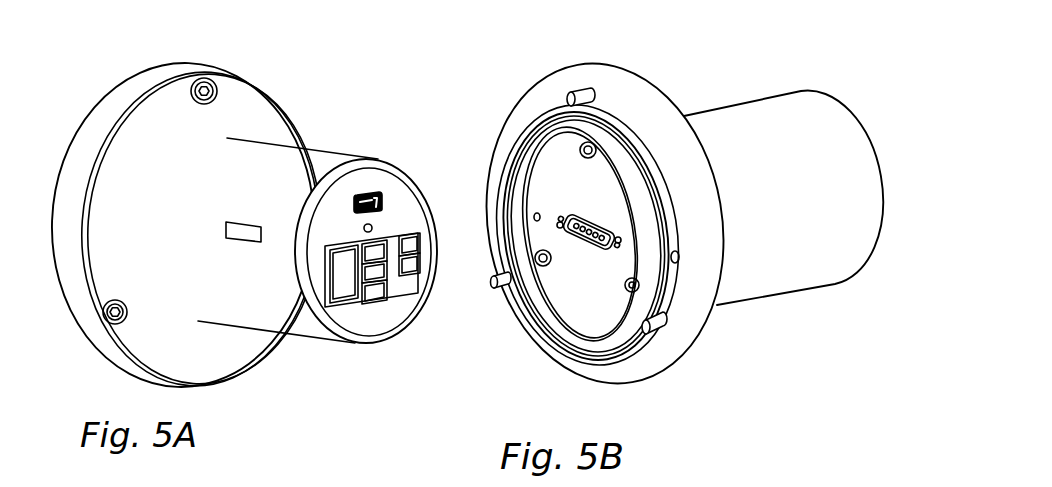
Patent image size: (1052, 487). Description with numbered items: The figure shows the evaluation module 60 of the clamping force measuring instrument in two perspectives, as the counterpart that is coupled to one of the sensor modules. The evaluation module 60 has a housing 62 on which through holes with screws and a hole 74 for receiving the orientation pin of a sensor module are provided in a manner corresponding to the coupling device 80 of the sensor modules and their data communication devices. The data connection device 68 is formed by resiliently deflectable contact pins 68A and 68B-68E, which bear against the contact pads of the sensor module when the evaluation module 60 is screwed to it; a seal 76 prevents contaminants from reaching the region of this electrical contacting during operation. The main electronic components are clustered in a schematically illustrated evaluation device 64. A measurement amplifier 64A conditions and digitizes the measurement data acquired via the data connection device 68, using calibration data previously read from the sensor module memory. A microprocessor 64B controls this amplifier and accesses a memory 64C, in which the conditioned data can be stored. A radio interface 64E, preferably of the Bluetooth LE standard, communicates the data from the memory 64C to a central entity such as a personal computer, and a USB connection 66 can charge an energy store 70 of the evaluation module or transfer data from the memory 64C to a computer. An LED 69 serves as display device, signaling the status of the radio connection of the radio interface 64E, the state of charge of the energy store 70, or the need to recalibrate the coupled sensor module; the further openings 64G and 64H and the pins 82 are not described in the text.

In FIG. 5A, the evaluation module 60 is at (254, 232).
In FIG. 5B, the evaluation module 60 is at (655, 239).
In FIG. 5A, the housing 62 is at (270, 290).
In FIG. 5A, the evaluation device 64 is at (337, 247).
In FIG. 5A, the measurement amplifier 64A is at (335, 283).
In FIG. 5A, the microprocessor 64B is at (367, 273).
In FIG. 5A, the memory 64C is at (380, 292).
In FIG. 5A, the radio interface 64E is at (371, 251).
In FIG. 5A, the connector opening 64G is at (410, 243).
In FIG. 5A, the connector opening 64H is at (413, 262).
In FIG. 5A, the USB connection 66 is at (362, 196).
In FIG. 5B, the data connection device 68 is at (544, 316).
In FIG. 5B, the contact pin 68A is at (563, 233).
In FIG. 5B, the contact pins 68B-68E is at (578, 238).
In FIG. 5A, the LED 69 is at (368, 226).
In FIG. 5A, the energy store 70 is at (243, 241).
In FIG. 5B, the hole 74 is at (677, 262).
In FIG. 5B, the seal 76 is at (665, 293).
In FIG. 5B, the coupling device 80 is at (650, 355).
In FIG. 5B, the locating pins 82 is at (591, 99).